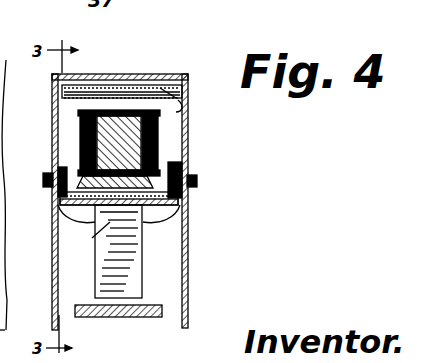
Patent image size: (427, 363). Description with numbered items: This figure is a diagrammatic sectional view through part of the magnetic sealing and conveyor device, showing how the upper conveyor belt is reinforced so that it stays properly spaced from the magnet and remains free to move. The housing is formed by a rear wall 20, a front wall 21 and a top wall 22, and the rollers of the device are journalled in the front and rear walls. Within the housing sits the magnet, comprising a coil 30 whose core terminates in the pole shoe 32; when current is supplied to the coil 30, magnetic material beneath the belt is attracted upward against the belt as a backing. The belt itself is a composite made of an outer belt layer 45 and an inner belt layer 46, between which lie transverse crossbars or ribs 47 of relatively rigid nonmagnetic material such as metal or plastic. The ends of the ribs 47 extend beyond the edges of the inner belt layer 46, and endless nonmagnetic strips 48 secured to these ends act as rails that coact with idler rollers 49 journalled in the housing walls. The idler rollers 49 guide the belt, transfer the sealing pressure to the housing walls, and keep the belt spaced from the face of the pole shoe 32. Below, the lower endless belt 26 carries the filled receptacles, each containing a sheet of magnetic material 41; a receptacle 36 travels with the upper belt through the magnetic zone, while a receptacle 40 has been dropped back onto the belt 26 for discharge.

The rear wall 20 is at (186, 247).
The front wall 21 is at (52, 262).
The top wall 22 is at (125, 77).
The endless belt 26 is at (117, 318).
The coil 30 is at (160, 136).
The pole shoe 32 is at (170, 149).
The receptacle 36 is at (144, 265).
The receptacle 40 is at (48, 188).
The sheet of magnetic material 41 is at (34, 240).
The outer belt layer 45 is at (160, 92).
The inner belt layer 46 is at (188, 104).
The transverse crossbars or ribs 47 is at (104, 95).
The endless nonmagnetic strips 48 is at (178, 104).
The idler rollers 49 is at (188, 168).